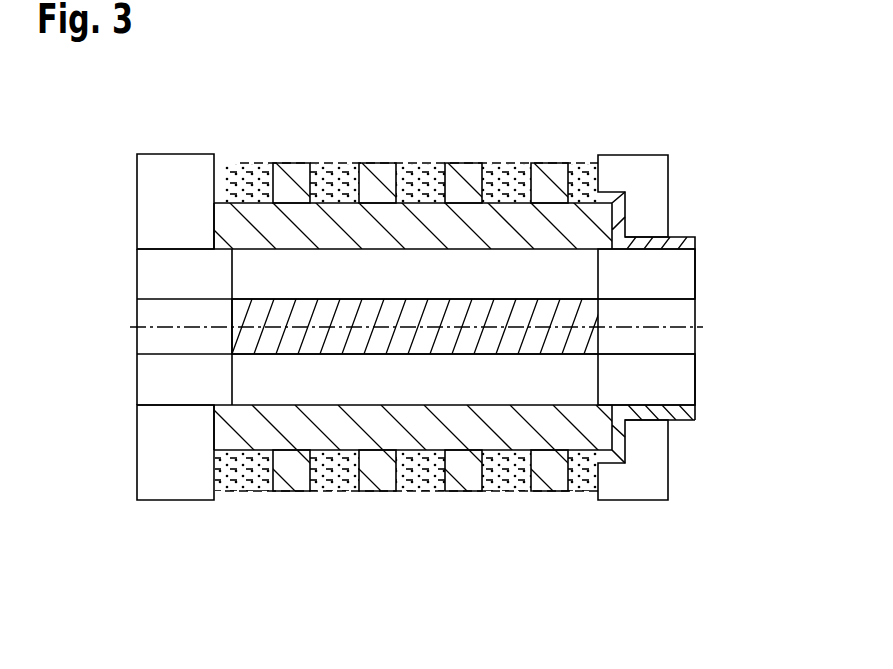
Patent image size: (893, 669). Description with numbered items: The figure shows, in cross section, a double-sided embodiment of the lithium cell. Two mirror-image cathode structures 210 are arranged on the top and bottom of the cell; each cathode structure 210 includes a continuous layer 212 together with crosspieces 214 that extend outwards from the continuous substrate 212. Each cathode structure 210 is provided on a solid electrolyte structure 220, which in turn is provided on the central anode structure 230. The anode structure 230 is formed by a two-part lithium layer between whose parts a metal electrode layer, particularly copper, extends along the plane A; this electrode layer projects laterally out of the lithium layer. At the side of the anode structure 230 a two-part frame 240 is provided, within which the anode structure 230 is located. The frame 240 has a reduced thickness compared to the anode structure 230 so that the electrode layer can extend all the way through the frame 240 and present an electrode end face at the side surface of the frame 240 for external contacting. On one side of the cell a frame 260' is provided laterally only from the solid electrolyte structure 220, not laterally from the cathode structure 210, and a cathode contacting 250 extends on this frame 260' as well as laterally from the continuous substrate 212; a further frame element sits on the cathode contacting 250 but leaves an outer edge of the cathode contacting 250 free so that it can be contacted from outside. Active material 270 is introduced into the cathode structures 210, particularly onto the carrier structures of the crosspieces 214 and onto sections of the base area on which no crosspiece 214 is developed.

The cathode structure 210 is at (117, 152).
The continuous layer 212 is at (235, 227).
The crosspieces 214 is at (548, 173).
The solid electrolyte structure 220 is at (248, 367).
The anode structure 230 is at (253, 312).
The frame 240 is at (682, 308).
The cathode contacting 250 is at (685, 412).
The frame 260' is at (419, 403).
The active material 270 is at (227, 475).
The plane A is at (431, 329).